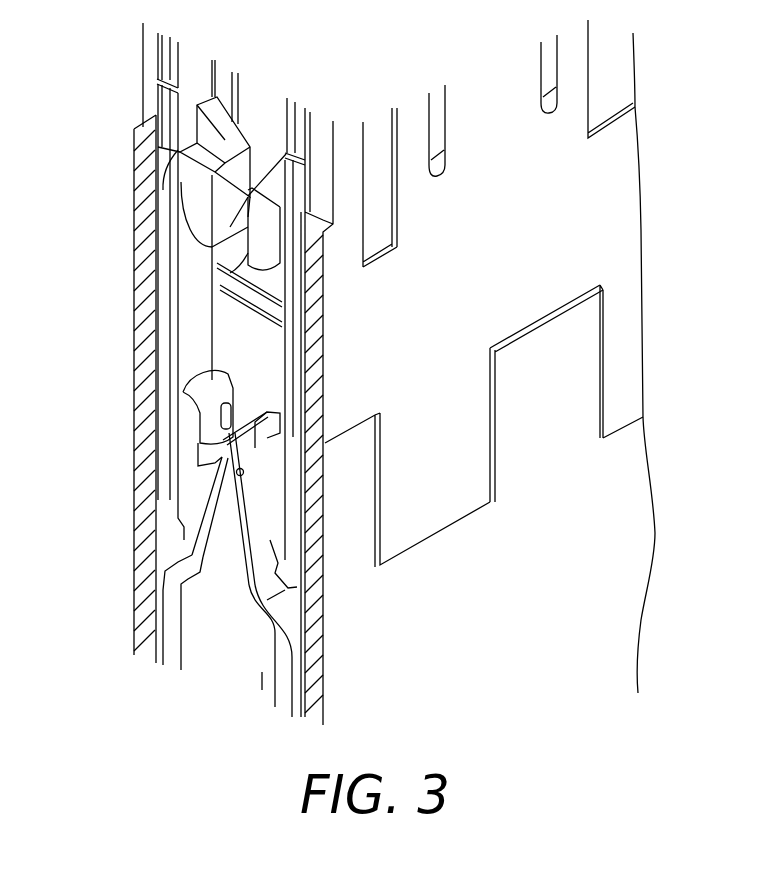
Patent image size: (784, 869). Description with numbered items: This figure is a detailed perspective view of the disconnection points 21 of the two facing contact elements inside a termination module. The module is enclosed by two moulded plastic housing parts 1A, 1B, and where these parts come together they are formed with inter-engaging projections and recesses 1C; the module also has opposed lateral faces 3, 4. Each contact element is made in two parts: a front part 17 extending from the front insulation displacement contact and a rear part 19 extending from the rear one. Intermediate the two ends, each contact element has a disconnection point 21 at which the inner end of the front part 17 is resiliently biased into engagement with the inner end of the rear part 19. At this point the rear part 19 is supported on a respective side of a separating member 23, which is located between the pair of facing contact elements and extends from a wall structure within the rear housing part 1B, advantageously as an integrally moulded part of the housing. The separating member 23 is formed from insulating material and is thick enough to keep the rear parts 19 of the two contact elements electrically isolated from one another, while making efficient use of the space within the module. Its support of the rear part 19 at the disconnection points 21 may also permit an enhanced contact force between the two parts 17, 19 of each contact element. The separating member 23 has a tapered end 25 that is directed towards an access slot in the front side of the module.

The housing part 1A is at (150, 288).
The housing part 1B is at (620, 497).
The inter-engaging projections and recesses 1C is at (607, 348).
The lateral face 3 is at (652, 598).
The lateral face 4 is at (121, 497).
The front part 17 is at (172, 256).
The rear part 19 is at (157, 612).
The disconnection point 21 is at (207, 488).
The separating member 23 is at (250, 663).
The tapered end 25 is at (228, 473).